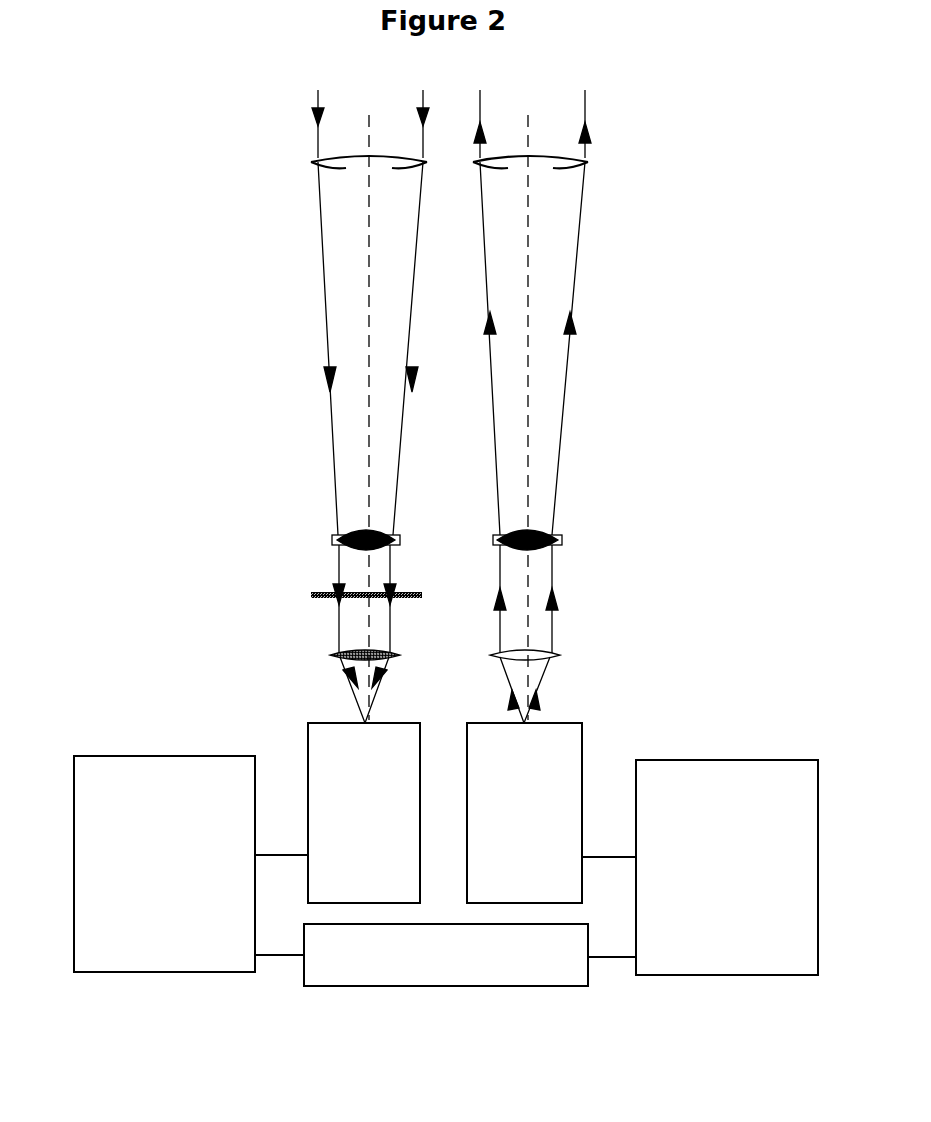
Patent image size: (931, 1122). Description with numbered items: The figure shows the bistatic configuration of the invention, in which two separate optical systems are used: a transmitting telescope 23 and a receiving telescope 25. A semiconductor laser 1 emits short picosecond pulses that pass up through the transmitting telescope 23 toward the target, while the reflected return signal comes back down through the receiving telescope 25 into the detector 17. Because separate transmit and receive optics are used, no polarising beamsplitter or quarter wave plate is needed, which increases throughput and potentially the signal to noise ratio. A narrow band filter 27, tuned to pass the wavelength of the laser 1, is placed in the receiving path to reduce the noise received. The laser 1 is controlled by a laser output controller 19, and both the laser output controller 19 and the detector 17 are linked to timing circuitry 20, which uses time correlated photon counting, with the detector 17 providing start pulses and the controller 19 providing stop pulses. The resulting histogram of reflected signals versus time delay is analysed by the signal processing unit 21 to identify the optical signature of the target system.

The semiconductor laser 1 is at (524, 813).
The detector 17 is at (364, 813).
The laser output controller 19 is at (700, 867).
The timing circuitry 20 is at (446, 955).
The signal processing unit 21 is at (191, 864).
The transmitting telescope 23 is at (595, 150).
The receiving telescope 25 is at (284, 150).
The narrow band filter 27 is at (291, 601).